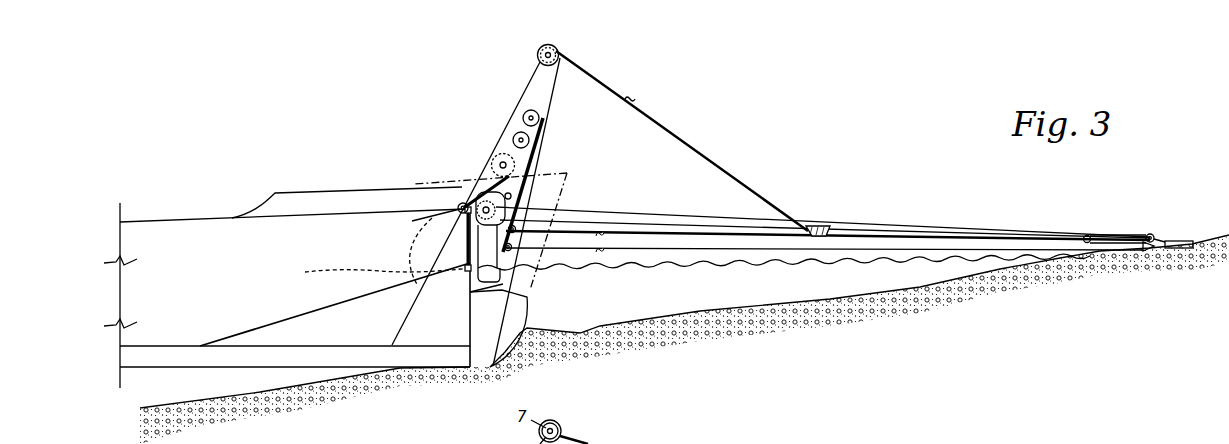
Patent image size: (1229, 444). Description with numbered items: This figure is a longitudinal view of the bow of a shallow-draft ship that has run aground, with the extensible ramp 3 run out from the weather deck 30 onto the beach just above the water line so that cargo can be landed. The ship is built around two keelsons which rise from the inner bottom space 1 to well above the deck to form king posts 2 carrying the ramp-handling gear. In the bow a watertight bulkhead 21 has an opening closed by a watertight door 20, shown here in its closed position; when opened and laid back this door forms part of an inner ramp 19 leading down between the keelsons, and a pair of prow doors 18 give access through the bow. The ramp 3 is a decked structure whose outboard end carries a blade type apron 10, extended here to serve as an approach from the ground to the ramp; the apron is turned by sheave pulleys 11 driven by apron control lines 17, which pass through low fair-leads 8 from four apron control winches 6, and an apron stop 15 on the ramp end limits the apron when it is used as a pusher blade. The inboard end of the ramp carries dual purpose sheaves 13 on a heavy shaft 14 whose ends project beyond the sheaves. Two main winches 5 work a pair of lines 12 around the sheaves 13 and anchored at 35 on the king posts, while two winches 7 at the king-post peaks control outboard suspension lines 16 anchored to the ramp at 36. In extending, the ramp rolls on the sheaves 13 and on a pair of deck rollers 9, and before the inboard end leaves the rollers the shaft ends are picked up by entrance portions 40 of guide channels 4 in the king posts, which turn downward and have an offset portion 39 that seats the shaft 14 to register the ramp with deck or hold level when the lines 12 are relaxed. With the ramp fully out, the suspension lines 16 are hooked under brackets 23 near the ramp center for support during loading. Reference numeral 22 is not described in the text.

The inner bottom space 1 is at (340, 361).
The king posts 2 is at (502, 284).
The extensible ramp 3 is at (708, 222).
The guide channels 4 is at (500, 253).
The main winches 5 is at (498, 163).
The apron control winches 6 is at (529, 118).
The winches 7 is at (544, 55).
The fair-leads 8 is at (511, 246).
The deck rollers 9 is at (548, 26).
The blade type apron 10 is at (1186, 238).
The sheave pulleys 11 is at (1149, 234).
The lines 12 is at (481, 190).
The dual purpose sheaves 13 is at (432, 220).
The shaft 14 is at (426, 221).
The apron stop 15 is at (1126, 233).
The outboard suspension lines 16 is at (727, 167).
The apron control lines 17 is at (698, 236).
The doors 18 is at (568, 174).
The inner ramp 19 is at (298, 319).
The watertight door 20 is at (463, 246).
The watertight bulkhead 21 is at (474, 325).
The stern 22 is at (496, 347).
The brackets 23 is at (815, 222).
The weather deck 30 is at (296, 214).
The anchors 35 is at (510, 196).
The anchor 36 is at (1084, 236).
The offset portion 39 is at (485, 253).
The entrance portions 40 is at (460, 204).